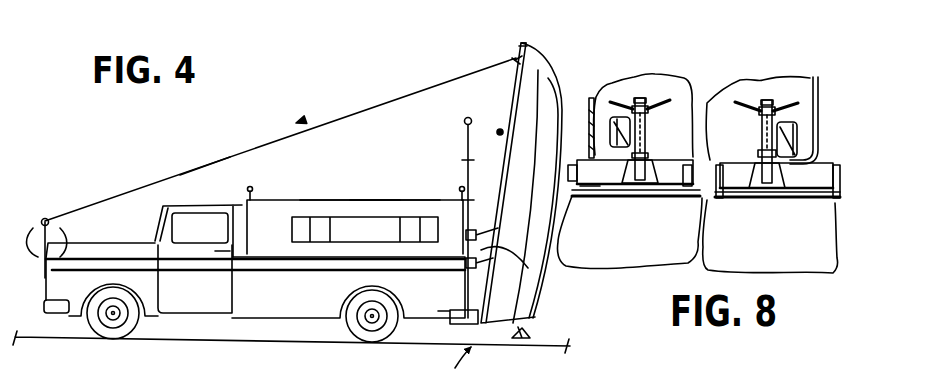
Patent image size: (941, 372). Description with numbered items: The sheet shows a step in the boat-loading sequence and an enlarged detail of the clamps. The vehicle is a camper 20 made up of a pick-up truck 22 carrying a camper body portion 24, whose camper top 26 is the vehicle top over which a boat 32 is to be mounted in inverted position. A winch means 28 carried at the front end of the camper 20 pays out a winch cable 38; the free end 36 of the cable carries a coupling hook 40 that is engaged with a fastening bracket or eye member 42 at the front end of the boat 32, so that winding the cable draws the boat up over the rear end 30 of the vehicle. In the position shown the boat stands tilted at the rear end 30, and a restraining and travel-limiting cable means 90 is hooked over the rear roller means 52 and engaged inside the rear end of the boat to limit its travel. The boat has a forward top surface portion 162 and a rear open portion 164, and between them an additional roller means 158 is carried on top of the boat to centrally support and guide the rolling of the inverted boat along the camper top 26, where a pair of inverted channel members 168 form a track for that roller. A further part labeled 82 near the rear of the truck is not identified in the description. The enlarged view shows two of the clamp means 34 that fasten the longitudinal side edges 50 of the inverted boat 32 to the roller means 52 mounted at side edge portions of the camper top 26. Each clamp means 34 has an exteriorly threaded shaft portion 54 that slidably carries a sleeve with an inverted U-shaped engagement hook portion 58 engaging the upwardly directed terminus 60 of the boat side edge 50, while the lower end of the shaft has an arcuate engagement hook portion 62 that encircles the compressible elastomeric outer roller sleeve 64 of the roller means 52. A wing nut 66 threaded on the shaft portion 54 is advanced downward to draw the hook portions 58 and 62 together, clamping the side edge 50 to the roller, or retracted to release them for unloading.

In FIG. 4, the camper 20 is at (190, 176).
In FIG. 4, the pick-up truck 22 is at (254, 273).
In FIG. 4, the camper body portion 24 is at (308, 200).
In FIG. 4, the camper top 26 is at (360, 200).
In FIG. 4, the winch means 28 is at (48, 217).
In FIG. 4, the rear end 30 is at (483, 290).
In FIG. 4, the boat 32 is at (540, 147).
In FIG. 8, the clamp means 34 is at (711, 111).
In FIG. 4, the free end of winch cable 36 is at (510, 60).
In FIG. 4, the winch cable 38 is at (415, 96).
In FIG. 4, the coupling hook 40 is at (518, 46).
In FIG. 4, the fastening bracket or eye member 42 is at (523, 43).
In FIG. 4, the longitudinal side edges 50 is at (468, 175).
In FIG. 8, the longitudinal side edges 50 is at (578, 198).
In FIG. 4, the roller means 52 is at (253, 194).
In FIG. 8, the roller means 52 is at (675, 198).
In FIG. 8, the exteriorly threaded shaft portion 54 is at (640, 97).
In FIG. 8, the inverted U-shaped engagement hook portion 58 is at (592, 97).
In FIG. 8, the upwardly directed terminus 60 is at (610, 137).
In FIG. 8, the arcuate engagement hook portion 62 is at (633, 198).
In FIG. 8, the outer roller sleeve 64 is at (590, 198).
In FIG. 8, the wing nut 66 is at (648, 108).
In FIG. 4, the hitch box 82 is at (456, 320).
In FIG. 4, the restraining and travel-limiting cable means 90 is at (485, 220).
In FIG. 4, the additional roller means 158 is at (498, 130).
In FIG. 4, the forward top surface portion 162 is at (503, 80).
In FIG. 4, the rear open portion 164 is at (528, 268).
In FIG. 4, the inverted channel members 168 is at (378, 200).